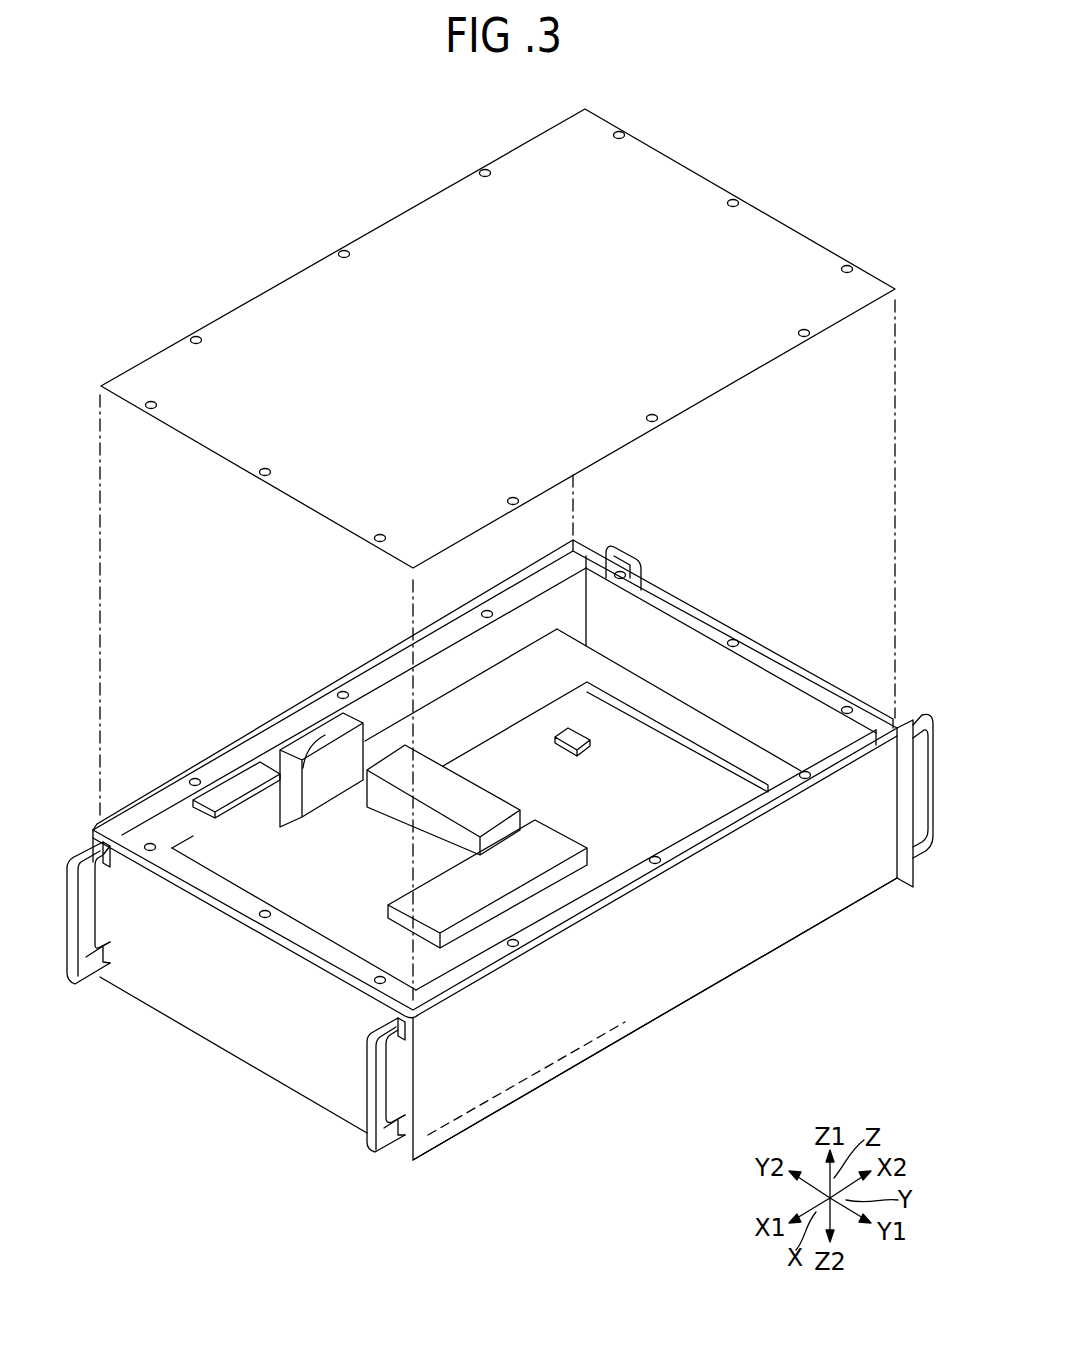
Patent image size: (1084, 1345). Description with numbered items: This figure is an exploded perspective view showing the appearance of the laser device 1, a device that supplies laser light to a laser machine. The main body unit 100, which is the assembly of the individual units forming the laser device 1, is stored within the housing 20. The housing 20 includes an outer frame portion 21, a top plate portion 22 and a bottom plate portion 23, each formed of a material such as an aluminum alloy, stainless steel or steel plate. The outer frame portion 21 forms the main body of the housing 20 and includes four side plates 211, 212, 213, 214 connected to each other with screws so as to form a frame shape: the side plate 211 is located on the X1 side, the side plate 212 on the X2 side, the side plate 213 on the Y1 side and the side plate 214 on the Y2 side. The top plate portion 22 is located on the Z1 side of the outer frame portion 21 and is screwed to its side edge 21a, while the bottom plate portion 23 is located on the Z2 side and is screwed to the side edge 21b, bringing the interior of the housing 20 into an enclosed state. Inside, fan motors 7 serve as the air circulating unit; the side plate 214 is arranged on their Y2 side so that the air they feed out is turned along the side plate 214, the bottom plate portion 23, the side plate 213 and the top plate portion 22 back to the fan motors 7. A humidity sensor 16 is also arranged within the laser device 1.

The laser device 1 is at (794, 172).
The fan motor 7 is at (318, 732).
The humidity sensor 16 is at (574, 733).
The housing 20 is at (186, 1080).
The outer frame portion 21 is at (495, 852).
The side edge on the Z1 side 21a is at (162, 806).
The side edge on the Z2 side 21b is at (483, 1116).
The top plate portion 22 is at (813, 246).
The bottom plate portion 23 is at (648, 1036).
The main body unit 100 is at (622, 621).
The side plate 211 is at (302, 1086).
The side plate 212 is at (767, 654).
The side plate 213 is at (700, 985).
The side plate 214 is at (326, 690).